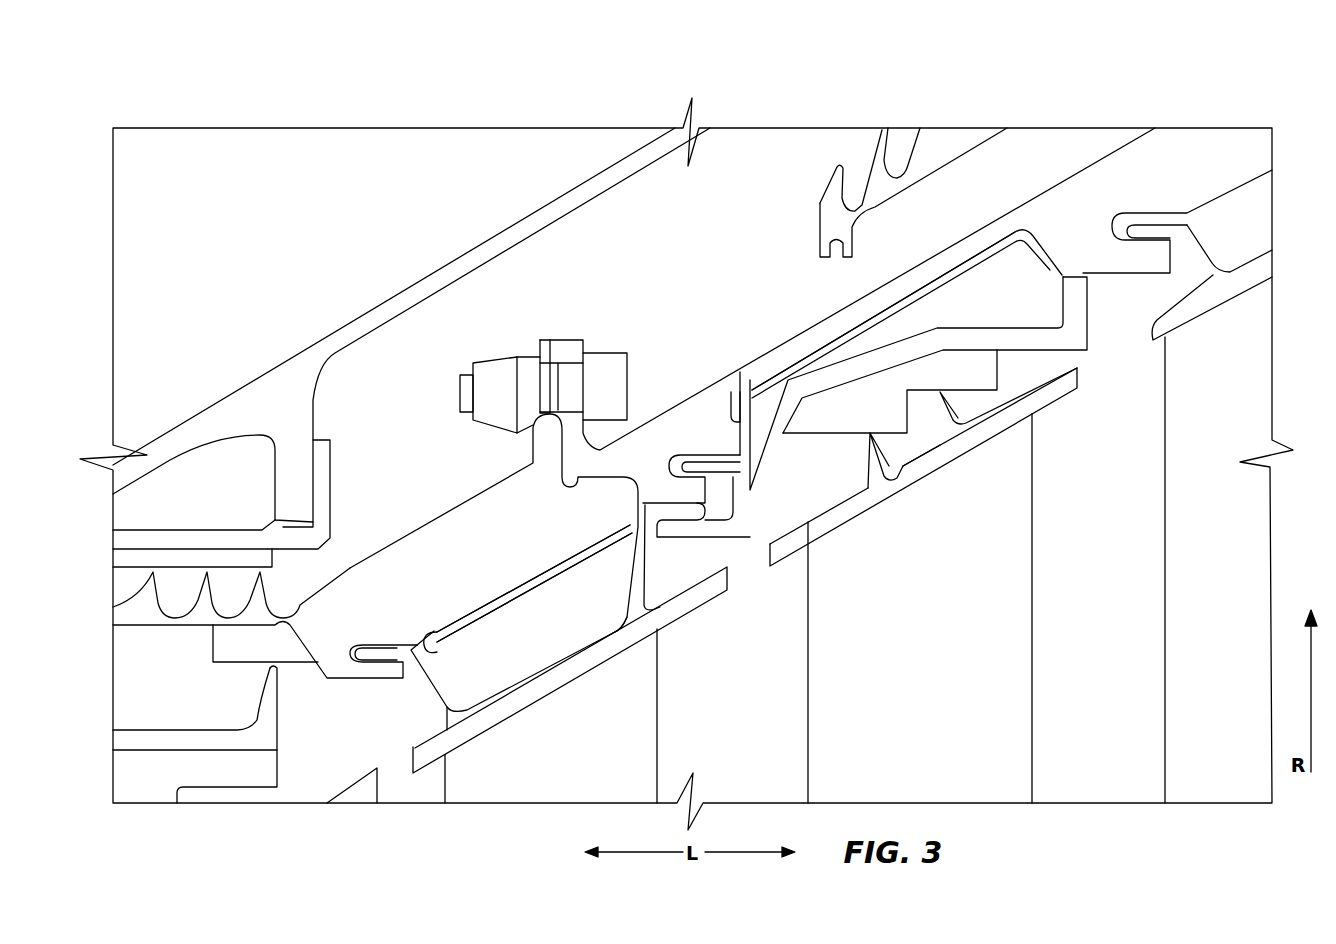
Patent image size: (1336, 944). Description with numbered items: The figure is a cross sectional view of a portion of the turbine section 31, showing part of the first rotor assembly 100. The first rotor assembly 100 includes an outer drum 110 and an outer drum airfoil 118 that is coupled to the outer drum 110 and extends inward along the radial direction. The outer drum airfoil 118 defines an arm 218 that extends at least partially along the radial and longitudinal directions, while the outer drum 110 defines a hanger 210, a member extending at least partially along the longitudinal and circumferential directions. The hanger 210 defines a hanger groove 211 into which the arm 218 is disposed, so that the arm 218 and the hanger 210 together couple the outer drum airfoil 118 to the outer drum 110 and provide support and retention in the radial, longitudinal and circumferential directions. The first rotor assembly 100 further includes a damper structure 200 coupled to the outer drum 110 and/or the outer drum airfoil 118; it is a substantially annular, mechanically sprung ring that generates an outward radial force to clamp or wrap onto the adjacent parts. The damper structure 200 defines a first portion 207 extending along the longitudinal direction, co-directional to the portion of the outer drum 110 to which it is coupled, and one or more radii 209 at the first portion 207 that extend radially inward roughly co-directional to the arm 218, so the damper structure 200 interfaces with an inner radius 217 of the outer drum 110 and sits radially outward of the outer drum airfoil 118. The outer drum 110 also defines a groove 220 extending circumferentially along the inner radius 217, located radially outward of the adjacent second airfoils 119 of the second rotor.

The turbine section 31 is at (848, 78).
The first rotor assembly 100 is at (990, 135).
The outer drum 110 is at (963, 247).
The outer drum airfoil 118 is at (527, 770).
The second airfoils 119 is at (892, 659).
The damper structure 200 is at (468, 620).
The first portion 207 is at (533, 587).
The radii 209 is at (617, 543).
The hanger 210 is at (381, 670).
The hanger groove 211 is at (358, 645).
The inner radius 217 is at (540, 564).
The arm 218 is at (400, 650).
The groove 220 is at (848, 344).